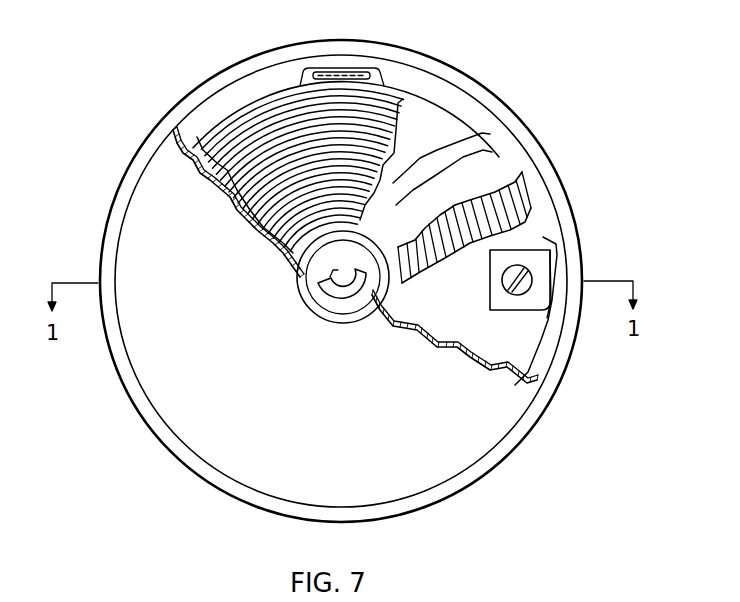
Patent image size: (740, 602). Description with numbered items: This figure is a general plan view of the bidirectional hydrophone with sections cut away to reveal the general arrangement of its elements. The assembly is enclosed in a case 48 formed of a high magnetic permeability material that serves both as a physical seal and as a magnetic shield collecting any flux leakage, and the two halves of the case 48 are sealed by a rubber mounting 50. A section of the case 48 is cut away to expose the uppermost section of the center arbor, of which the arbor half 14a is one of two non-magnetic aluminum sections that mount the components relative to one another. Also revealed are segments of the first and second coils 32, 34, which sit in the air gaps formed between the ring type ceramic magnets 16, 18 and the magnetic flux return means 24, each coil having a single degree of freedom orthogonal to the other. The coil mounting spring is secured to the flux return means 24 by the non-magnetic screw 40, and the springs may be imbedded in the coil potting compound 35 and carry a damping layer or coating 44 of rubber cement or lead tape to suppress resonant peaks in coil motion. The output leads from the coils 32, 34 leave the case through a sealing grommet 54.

The center arbor section 14a is at (306, 278).
The ring type ceramic magnet 16 is at (487, 153).
The ring type ceramic magnet 18 is at (443, 117).
The magnetic flux return means 24 is at (470, 324).
The first coil 32 is at (513, 193).
The second coil 34 is at (396, 100).
The coil potting compound 35 is at (560, 313).
The non-magnetic screw 40 is at (514, 264).
The damping layer or coating 44 is at (550, 264).
The case 48 is at (530, 400).
The rubber mounting 50 is at (503, 460).
The sealing grommet 54 is at (332, 297).